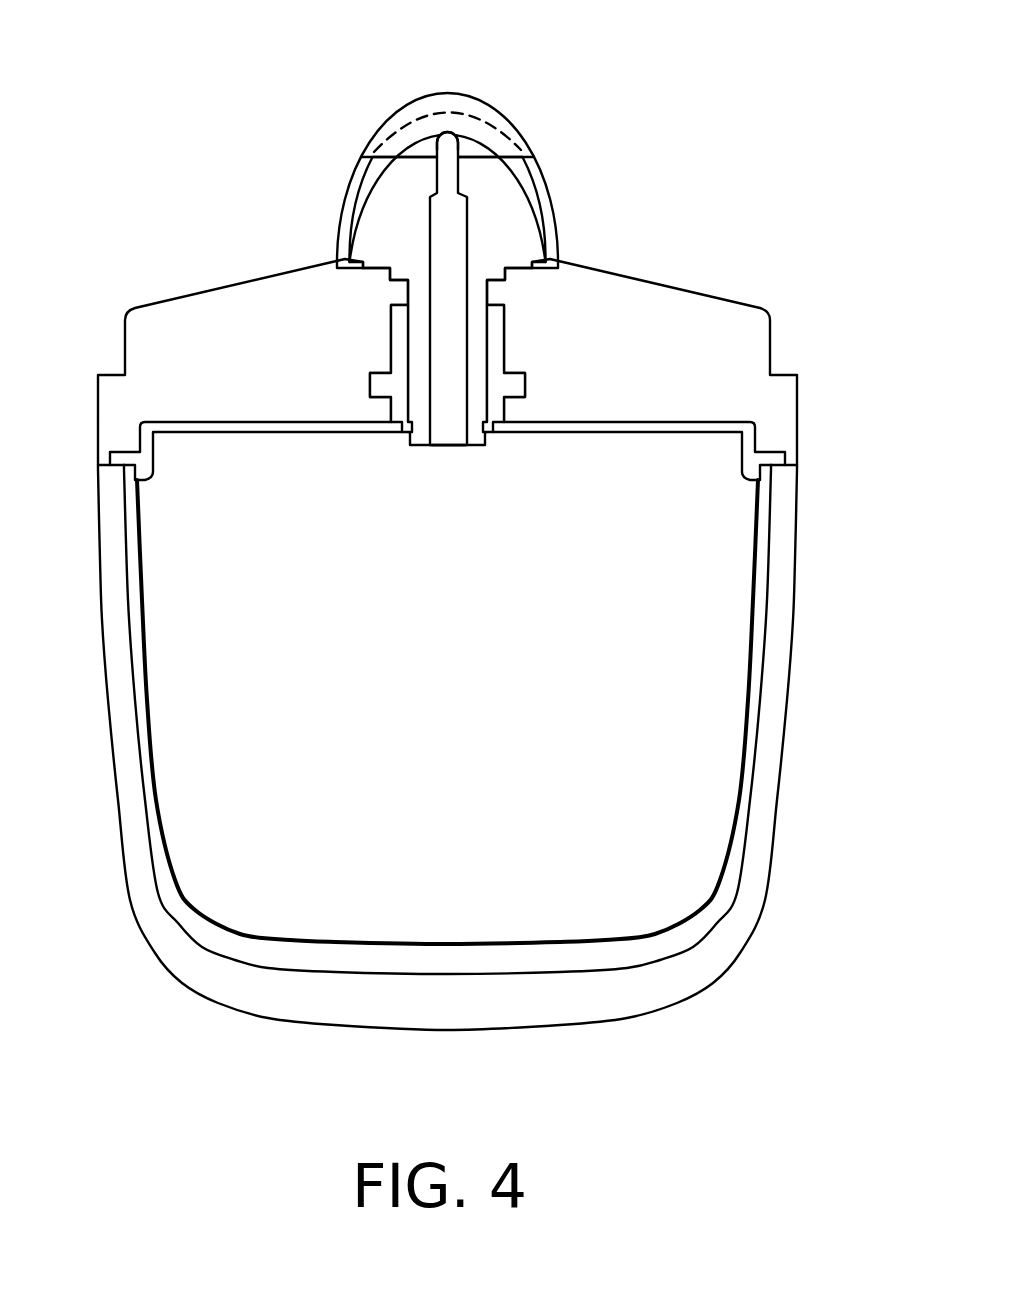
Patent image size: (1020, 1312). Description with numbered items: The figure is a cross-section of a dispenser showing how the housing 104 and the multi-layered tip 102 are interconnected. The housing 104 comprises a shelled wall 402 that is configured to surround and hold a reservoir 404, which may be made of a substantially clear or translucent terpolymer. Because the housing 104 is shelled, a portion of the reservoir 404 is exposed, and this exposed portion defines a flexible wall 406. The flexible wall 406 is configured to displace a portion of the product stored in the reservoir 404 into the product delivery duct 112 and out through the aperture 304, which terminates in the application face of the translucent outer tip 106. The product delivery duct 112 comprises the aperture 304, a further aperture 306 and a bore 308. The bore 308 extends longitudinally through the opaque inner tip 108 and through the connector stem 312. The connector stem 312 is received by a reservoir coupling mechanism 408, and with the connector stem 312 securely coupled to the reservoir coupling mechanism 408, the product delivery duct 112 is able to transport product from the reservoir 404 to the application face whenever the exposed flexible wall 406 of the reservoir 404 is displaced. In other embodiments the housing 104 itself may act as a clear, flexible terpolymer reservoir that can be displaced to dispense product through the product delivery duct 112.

The multi-layered tip 102 is at (447, 223).
The housing 104 is at (780, 292).
The translucent outer tip 106 is at (355, 165).
The opaque inner tip 108 is at (348, 203).
The product delivery duct 112 is at (465, 291).
The aperture 304 is at (458, 110).
The aperture 306 is at (460, 148).
The bore 308 is at (467, 255).
The connector stem 312 is at (353, 247).
The shelled wall 402 is at (748, 943).
The reservoir 404 is at (740, 872).
The flexible wall 406 is at (720, 790).
The reservoir coupling mechanism 408 is at (390, 320).